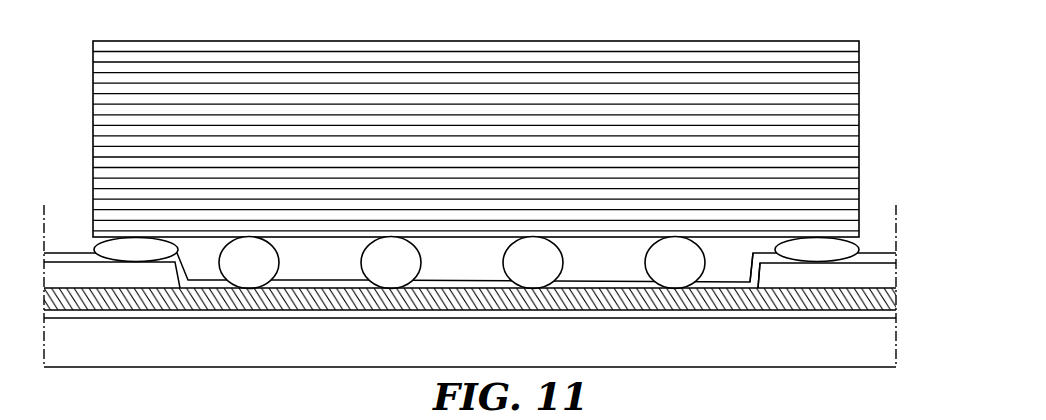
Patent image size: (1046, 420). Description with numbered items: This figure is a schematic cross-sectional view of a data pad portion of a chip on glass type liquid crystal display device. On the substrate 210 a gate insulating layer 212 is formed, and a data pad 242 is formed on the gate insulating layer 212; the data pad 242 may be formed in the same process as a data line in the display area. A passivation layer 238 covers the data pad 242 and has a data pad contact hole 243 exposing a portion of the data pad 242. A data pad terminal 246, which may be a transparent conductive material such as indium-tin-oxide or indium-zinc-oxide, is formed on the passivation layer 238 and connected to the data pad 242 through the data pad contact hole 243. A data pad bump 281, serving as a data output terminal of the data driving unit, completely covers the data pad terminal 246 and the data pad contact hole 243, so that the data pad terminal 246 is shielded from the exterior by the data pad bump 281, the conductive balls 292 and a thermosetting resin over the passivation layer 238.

The data pad bump 281 is at (858, 177).
The conductive balls 292 is at (676, 248).
The data pad contact hole 243 is at (334, 265).
The data pad 242 is at (770, 288).
The data pad terminal 246 is at (890, 255).
The passivation layer 238 is at (890, 273).
The gate insulating layer 212 is at (890, 313).
The substrate 210 is at (450, 352).